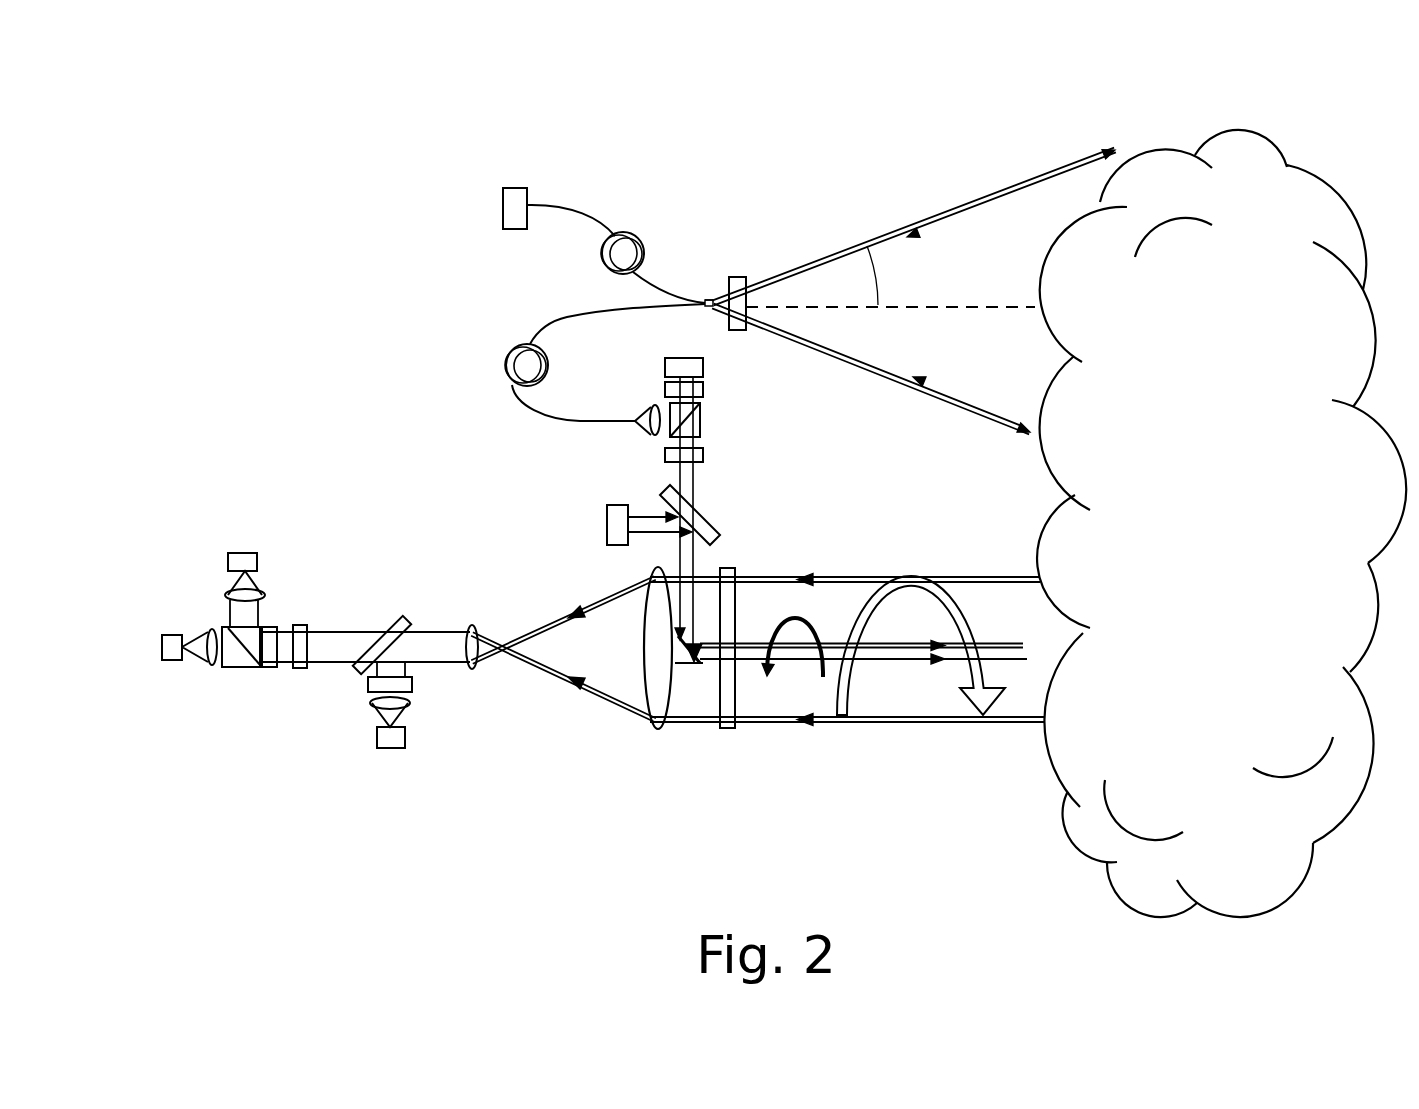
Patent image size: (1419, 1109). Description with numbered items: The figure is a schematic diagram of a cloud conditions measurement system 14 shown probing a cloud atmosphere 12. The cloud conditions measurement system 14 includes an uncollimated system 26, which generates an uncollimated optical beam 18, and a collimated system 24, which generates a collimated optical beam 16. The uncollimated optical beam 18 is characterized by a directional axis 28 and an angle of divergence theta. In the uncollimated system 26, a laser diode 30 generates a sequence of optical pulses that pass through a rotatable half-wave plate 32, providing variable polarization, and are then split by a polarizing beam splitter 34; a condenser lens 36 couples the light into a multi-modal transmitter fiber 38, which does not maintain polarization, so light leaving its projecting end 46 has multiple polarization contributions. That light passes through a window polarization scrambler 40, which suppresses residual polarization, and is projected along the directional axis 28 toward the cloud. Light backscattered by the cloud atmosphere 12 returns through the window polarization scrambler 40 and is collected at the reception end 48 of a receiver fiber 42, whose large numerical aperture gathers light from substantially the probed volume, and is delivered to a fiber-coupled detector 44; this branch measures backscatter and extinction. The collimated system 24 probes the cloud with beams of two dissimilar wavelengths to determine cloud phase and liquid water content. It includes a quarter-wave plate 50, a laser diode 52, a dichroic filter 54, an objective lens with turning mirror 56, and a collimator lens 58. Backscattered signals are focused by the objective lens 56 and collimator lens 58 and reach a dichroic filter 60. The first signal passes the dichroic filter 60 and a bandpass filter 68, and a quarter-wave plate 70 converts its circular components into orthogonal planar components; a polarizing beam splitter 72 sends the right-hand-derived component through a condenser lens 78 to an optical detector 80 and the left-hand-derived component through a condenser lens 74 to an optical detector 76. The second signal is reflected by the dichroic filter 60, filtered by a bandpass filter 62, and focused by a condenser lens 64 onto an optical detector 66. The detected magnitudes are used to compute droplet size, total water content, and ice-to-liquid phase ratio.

The cloud atmosphere 12 is at (1204, 454).
The cloud conditions measurement system 14 is at (233, 236).
The collimated optical beam 16 is at (905, 640).
The uncollimated optical beam 18 is at (951, 196).
The collimated system 24 is at (425, 740).
The uncollimated system 26 is at (575, 186).
The directional axis 28 is at (990, 300).
The laser diode 30 is at (680, 357).
The half-wave plate 32 is at (705, 389).
The polarizing beam splitter 34 is at (703, 420).
The condenser lens 36 is at (650, 425).
The transmitter fiber 38 is at (505, 365).
The window polarization scrambler 40 is at (738, 277).
The receiver fiber 42 is at (618, 225).
The fiber-coupled detector 44 is at (503, 205).
The projecting end 46 is at (705, 311).
The reception end 48 is at (708, 297).
The quarter-wave plate 50 is at (665, 455).
The laser diode 52 is at (607, 524).
The dichroic filter 54 is at (705, 510).
The objective lens with turning mirror 56 is at (648, 683).
The collimator lens 58 is at (498, 675).
The dichroic filter 60 is at (386, 625).
The bandpass filter 62 is at (368, 683).
The condenser lens 64 is at (408, 703).
The optical detector 66 is at (395, 748).
The bandpass filter 68 is at (300, 670).
The quarter-wave plate 70 is at (268, 627).
The polarizing beam splitter 72 is at (245, 667).
The condenser lens 74 is at (232, 598).
The optical detector 76 is at (247, 551).
The condenser lens 78 is at (208, 630).
The optical detector 80 is at (162, 647).